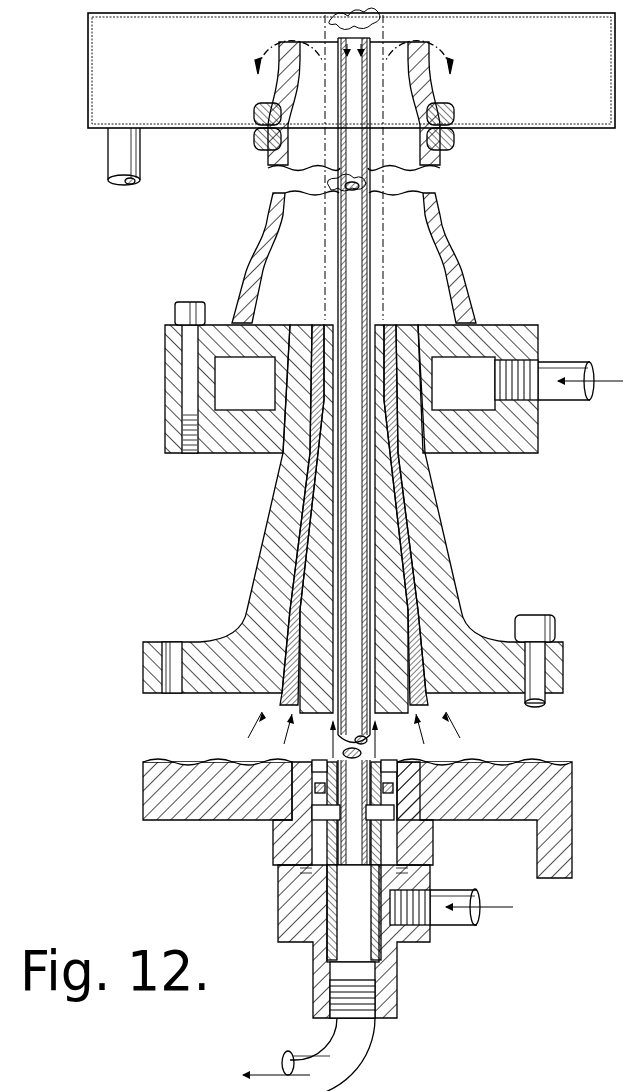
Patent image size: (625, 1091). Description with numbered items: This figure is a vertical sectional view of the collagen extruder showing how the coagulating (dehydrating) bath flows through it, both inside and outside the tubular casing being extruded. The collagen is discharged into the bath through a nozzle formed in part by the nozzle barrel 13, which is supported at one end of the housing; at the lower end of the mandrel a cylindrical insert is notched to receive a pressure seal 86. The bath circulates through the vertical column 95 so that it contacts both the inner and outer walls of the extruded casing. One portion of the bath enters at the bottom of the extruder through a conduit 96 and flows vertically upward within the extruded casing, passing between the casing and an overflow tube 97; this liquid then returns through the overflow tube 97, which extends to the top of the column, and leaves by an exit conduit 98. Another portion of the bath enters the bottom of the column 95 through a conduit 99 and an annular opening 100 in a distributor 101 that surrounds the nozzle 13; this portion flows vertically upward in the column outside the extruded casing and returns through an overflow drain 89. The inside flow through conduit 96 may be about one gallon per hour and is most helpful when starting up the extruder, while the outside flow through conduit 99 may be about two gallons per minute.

The nozzle barrel 13 is at (454, 560).
The pressure seal 86 is at (386, 764).
The overflow drain 89 is at (108, 148).
The vertical column 95 is at (272, 214).
The conduit 96 is at (470, 930).
The overflow tube 97 is at (371, 240).
The exit conduit 98 is at (284, 1060).
The conduit 99 is at (582, 372).
The annular opening 100 is at (275, 362).
The distributor 101 is at (532, 448).